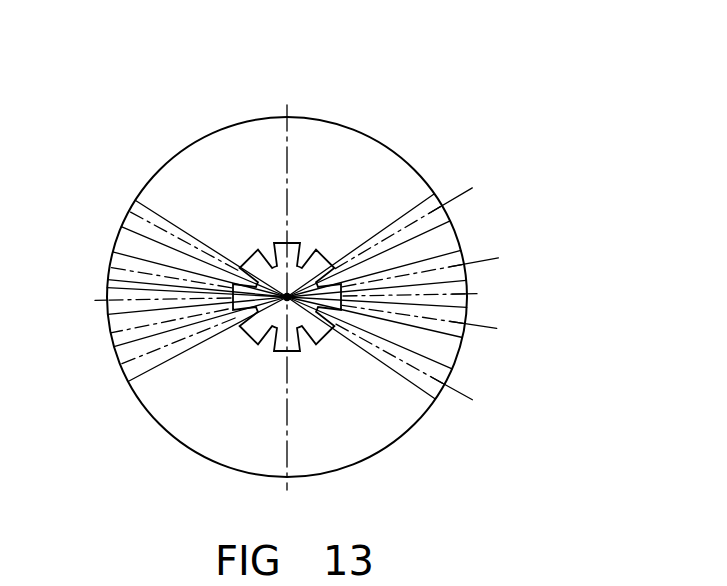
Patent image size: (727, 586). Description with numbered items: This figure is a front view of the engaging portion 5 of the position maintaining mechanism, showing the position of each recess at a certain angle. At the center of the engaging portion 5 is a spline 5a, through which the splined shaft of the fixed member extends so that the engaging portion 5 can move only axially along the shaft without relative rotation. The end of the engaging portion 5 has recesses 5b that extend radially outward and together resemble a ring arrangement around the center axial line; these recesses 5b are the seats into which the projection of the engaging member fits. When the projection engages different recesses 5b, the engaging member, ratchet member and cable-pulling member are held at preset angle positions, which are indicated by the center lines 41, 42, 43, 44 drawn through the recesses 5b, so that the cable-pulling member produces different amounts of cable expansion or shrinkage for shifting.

The engaging portion 5 is at (338, 120).
The spline 5a is at (277, 245).
The recesses 5b is at (136, 200).
The center line 41 is at (143, 215).
The center line 42 is at (125, 272).
The center line 43 is at (128, 329).
The center line 44 is at (147, 383).